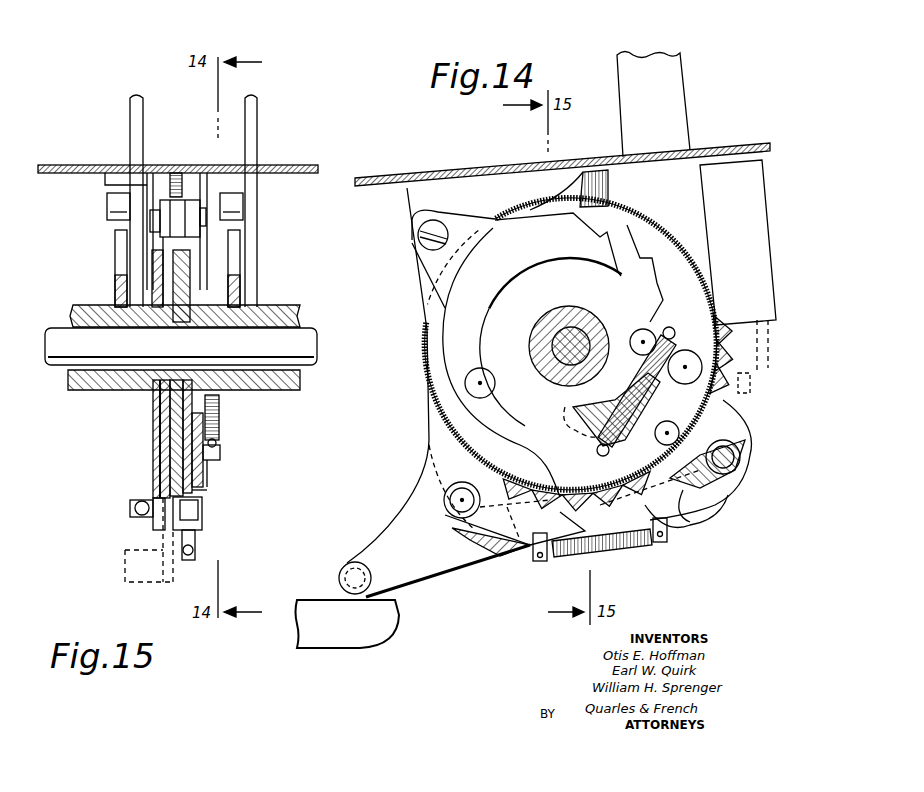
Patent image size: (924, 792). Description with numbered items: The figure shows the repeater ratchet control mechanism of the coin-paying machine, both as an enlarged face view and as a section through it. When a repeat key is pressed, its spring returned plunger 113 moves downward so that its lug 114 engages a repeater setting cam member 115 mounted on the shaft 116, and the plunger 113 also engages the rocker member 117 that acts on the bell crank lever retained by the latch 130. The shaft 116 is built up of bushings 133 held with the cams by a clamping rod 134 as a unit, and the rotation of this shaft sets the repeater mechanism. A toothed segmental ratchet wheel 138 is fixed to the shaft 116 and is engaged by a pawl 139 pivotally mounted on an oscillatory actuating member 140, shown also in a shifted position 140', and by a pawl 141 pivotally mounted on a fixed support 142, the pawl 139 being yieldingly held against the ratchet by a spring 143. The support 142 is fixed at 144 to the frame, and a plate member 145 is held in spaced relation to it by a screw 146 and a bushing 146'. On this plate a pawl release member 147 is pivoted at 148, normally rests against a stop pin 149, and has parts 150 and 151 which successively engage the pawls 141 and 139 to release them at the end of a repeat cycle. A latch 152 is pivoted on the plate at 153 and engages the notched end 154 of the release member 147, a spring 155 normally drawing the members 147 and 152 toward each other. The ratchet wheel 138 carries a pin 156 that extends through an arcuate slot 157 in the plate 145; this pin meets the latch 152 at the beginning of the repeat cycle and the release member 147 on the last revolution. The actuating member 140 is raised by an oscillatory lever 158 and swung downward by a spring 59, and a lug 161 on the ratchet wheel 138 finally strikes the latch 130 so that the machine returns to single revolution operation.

In FIG. 15, the spring 59 is at (132, 510).
In FIG. 14, the plunger 113 is at (682, 128).
In FIG. 15, the lug 114 is at (112, 207).
In FIG. 15, the repeater setting cam member 115 is at (116, 257).
In FIG. 15, the shaft 116 is at (76, 316).
In FIG. 14, the shaft 116 is at (562, 330).
In FIG. 14, the rocker member 117 is at (736, 165).
In FIG. 14, the latch 130 is at (750, 385).
In FIG. 15, the bushings 133 is at (118, 392).
In FIG. 15, the clamping rod 134 is at (298, 340).
In FIG. 14, the clamping rod 134 is at (588, 342).
In FIG. 15, the toothed segmental ratchet wheel 138 is at (176, 462).
In FIG. 14, the toothed segmental ratchet wheel 138 is at (730, 392).
In FIG. 15, the pawl 139 is at (200, 510).
In FIG. 14, the pawl 139 is at (698, 515).
In FIG. 15, the oscillatory actuating member 140 is at (127, 439).
In FIG. 14, the oscillatory actuating member 140 is at (565, 481).
In FIG. 15, the lever alternate position 140' is at (118, 540).
In FIG. 14, the lever alternate position 140' is at (349, 559).
In FIG. 14, the pawl 141 is at (518, 535).
In FIG. 15, the fixed support 142 is at (158, 425).
In FIG. 14, the fixed support 142 is at (438, 186).
In FIG. 15, the spring 143 is at (196, 548).
In FIG. 14, the spring 143 is at (622, 552).
In FIG. 15, the fixing point 144 is at (105, 178).
In FIG. 15, the plate member 145 is at (208, 474).
In FIG. 14, the plate member 145 is at (632, 228).
In FIG. 15, the screw 146 is at (193, 206).
In FIG. 14, the screw 146 is at (451, 314).
In FIG. 15, the bushing 146' is at (191, 171).
In FIG. 15, the pawl release member 147 is at (205, 492).
In FIG. 14, the pawl release member 147 is at (471, 335).
In FIG. 14, the pivot 148 is at (483, 372).
In FIG. 14, the stop pin 149 is at (670, 428).
In FIG. 14, the part 150 is at (576, 492).
In FIG. 14, the part 151 is at (605, 488).
In FIG. 14, the latch 152 is at (666, 300).
In FIG. 14, the pivot 153 is at (688, 360).
In FIG. 14, the notched end 154 is at (608, 253).
In FIG. 15, the spring 155 is at (220, 425).
In FIG. 14, the spring 155 is at (644, 404).
In FIG. 14, the pin 156 is at (645, 332).
In FIG. 15, the arcuate slot 157 is at (160, 445).
In FIG. 14, the arcuate slot 157 is at (570, 420).
In FIG. 14, the oscillatory lever 158 is at (364, 640).
In FIG. 14, the lug 161 is at (612, 190).